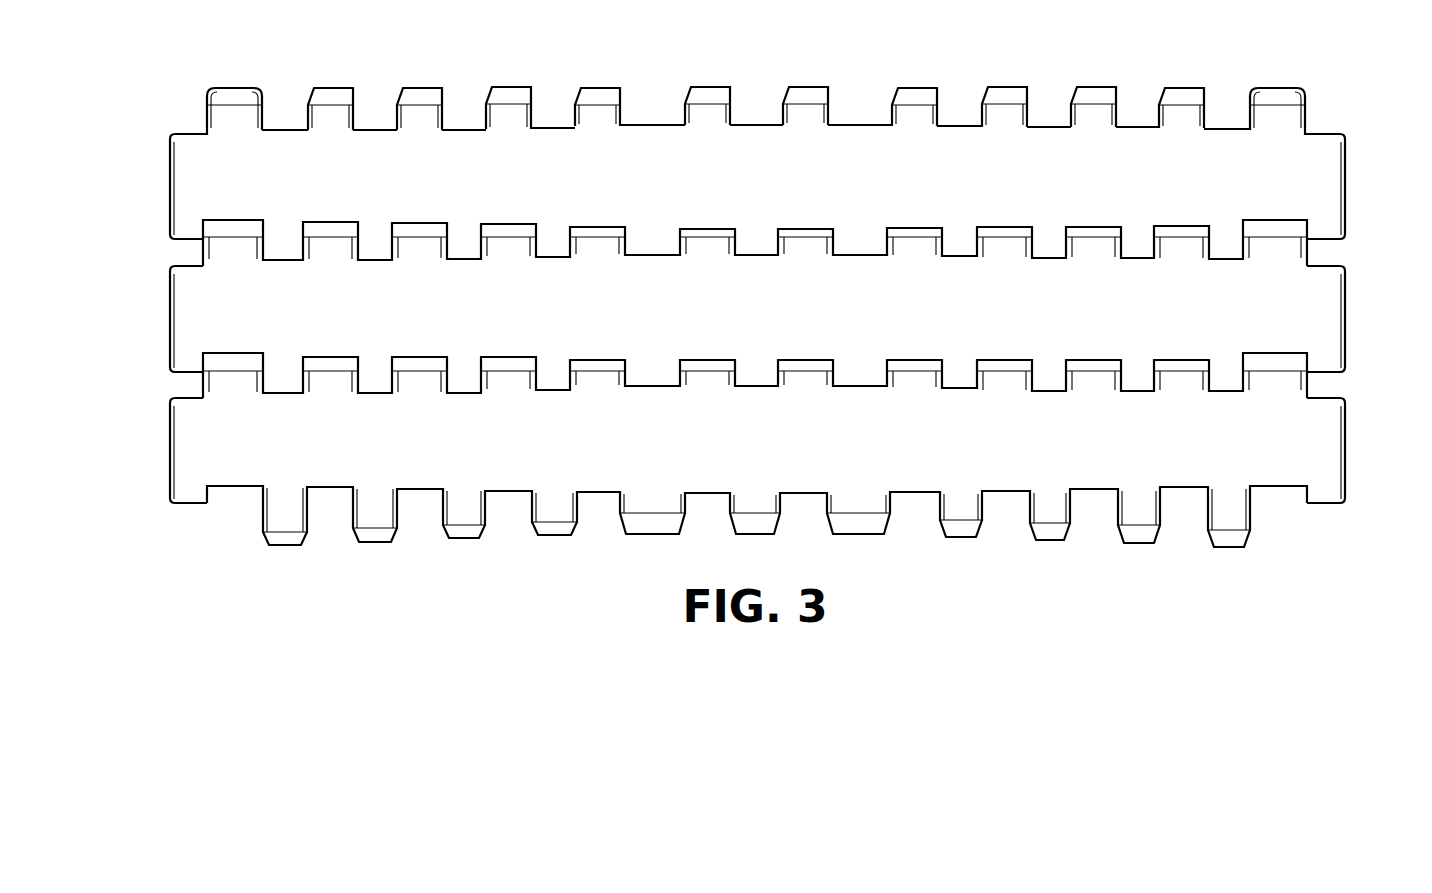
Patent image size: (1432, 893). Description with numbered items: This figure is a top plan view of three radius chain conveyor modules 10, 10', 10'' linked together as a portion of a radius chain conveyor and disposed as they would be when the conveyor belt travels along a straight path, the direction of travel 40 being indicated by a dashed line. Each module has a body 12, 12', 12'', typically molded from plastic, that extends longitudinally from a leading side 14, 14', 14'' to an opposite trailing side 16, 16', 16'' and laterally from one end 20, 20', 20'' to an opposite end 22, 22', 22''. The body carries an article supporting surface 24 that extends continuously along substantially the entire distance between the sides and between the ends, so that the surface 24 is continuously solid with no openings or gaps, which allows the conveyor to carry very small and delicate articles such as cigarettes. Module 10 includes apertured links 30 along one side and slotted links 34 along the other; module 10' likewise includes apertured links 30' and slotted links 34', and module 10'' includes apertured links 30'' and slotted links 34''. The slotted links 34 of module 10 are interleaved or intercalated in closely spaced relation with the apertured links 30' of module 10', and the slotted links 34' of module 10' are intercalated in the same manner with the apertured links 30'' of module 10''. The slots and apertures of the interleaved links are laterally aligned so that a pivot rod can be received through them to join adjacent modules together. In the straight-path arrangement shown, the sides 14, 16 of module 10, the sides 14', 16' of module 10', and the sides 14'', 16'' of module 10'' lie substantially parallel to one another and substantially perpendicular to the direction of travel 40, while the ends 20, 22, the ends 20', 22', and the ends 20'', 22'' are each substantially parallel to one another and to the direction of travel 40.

The radius chain conveyor module 10 is at (715, 92).
The module 10' is at (709, 231).
The module 10'' is at (709, 440).
The body 12 is at (730, 161).
The body 12' is at (712, 338).
The body 12'' is at (706, 428).
The side 14 is at (803, 86).
The side 14' is at (753, 296).
The side 14'' is at (755, 427).
The side 16 is at (722, 201).
The side 16' is at (668, 336).
The side 16'' is at (679, 450).
The end 20 is at (156, 202).
The end 20' is at (155, 332).
The end 20'' is at (155, 450).
The end 22 is at (1363, 202).
The end 22' is at (1364, 332).
The end 22'' is at (1364, 450).
The article supporting surface 24 is at (300, 176).
The apertured links 30 is at (712, 74).
The apertured links 30' is at (755, 281).
The apertured links 30'' is at (754, 419).
The slotted links 34 is at (755, 215).
The slotted links 34' is at (755, 340).
The slotted links 34'' is at (756, 477).
The direction of travel 40 is at (755, 125).